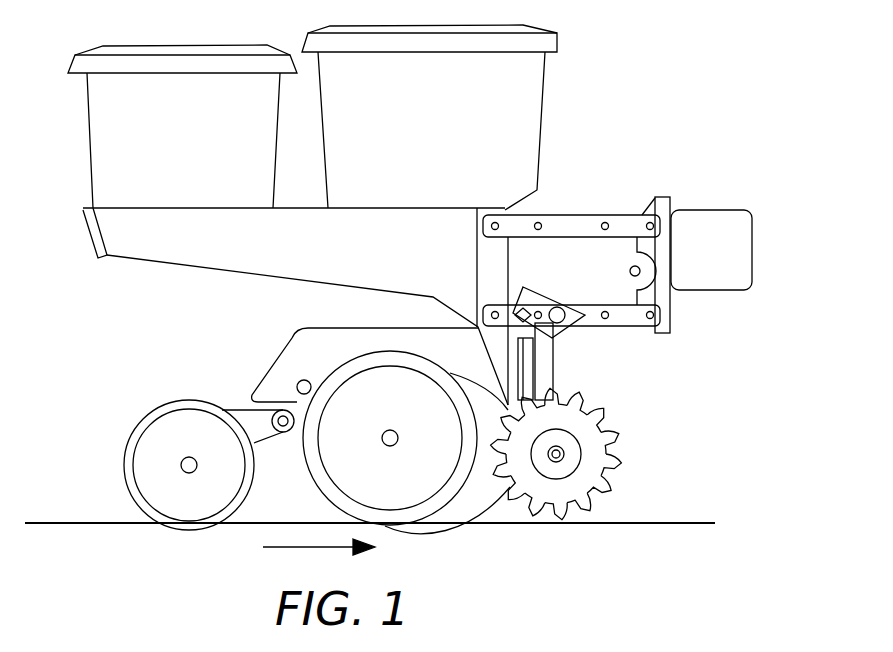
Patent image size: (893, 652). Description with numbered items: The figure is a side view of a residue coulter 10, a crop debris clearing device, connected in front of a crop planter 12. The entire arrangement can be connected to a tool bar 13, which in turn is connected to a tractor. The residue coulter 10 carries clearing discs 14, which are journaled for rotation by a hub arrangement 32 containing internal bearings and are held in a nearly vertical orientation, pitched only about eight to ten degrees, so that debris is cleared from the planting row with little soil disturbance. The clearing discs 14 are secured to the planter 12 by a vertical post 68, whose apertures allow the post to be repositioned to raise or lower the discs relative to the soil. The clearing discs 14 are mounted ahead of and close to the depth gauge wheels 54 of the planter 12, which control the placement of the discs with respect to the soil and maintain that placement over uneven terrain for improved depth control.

The residue coulter 10 is at (649, 399).
The crop planter 12 is at (596, 158).
The tool bar 13 is at (723, 238).
The clearing discs 14 is at (563, 455).
The hub arrangement 32 is at (620, 470).
The gauge wheels 54 is at (452, 485).
The vertical post 68 is at (542, 362).